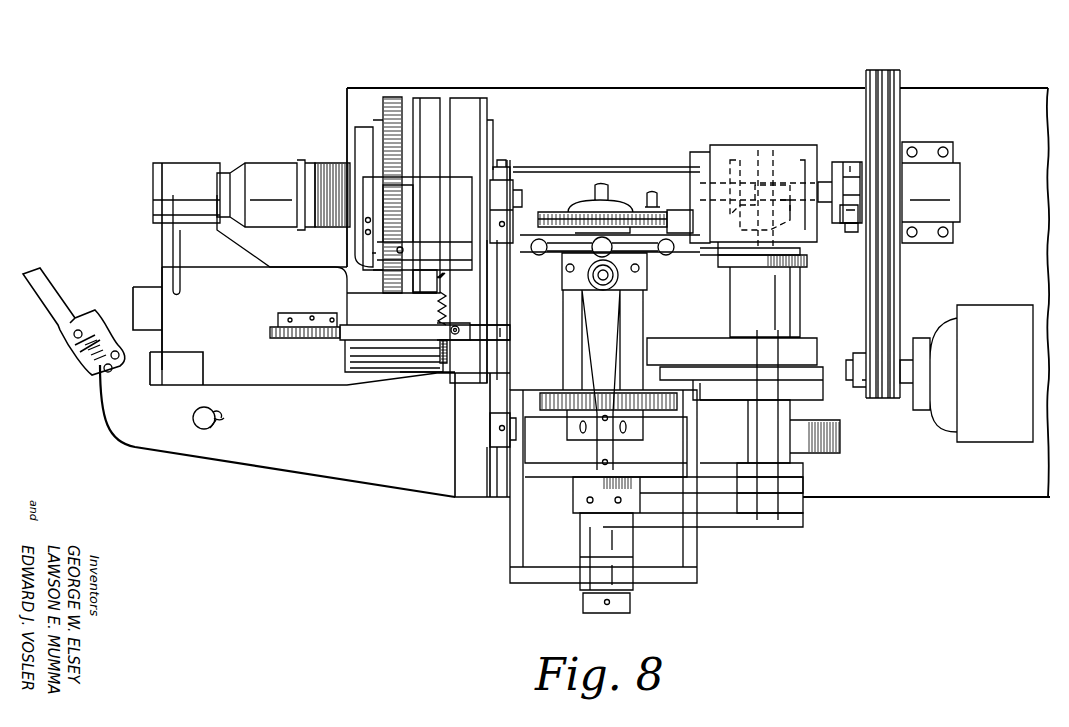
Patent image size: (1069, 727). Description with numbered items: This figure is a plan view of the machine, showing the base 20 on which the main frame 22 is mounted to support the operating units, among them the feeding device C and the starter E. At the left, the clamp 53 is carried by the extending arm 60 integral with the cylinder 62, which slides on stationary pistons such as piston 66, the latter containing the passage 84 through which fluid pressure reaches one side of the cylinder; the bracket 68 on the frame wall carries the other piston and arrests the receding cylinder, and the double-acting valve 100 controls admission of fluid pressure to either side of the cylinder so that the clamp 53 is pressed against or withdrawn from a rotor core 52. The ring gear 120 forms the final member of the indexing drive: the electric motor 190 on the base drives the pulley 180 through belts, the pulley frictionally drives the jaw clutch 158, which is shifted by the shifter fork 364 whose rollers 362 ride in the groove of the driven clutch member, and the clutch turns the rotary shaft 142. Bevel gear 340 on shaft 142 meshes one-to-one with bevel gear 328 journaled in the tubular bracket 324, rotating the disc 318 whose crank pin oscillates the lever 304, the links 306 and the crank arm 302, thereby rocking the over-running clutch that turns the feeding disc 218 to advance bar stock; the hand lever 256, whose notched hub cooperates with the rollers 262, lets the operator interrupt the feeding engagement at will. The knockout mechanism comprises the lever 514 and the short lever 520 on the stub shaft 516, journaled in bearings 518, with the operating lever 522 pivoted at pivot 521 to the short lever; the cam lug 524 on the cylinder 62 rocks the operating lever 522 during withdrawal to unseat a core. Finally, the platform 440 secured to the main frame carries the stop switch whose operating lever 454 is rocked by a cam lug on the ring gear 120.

The base 20 is at (867, 490).
The main frame 22 is at (470, 491).
The bracket 68 is at (278, 473).
The starter E is at (216, 420).
The double-acting valve 100 is at (102, 365).
The extending arm 60 is at (165, 240).
The cylinder 62 is at (288, 276).
The clamp 53 is at (287, 162).
The rotor core 52 is at (340, 160).
The ring gear 120 is at (391, 98).
The operating lever 454 is at (383, 199).
The platform 440 is at (420, 270).
The bearings 518 is at (498, 214).
The stub shaft 516 is at (504, 275).
The operating lever 522 is at (398, 308).
The cam lug 524 is at (285, 313).
The pivot 521 is at (455, 326).
The short lever 520 is at (508, 328).
The stationary piston 66 is at (445, 363).
The lever 514 is at (520, 194).
The feeding device C is at (558, 195).
The feeding disc 218 is at (641, 212).
The rollers 262 is at (618, 275).
The tubular bracket 324 is at (738, 288).
The disc 318 is at (840, 441).
The hand lever 256 is at (613, 445).
The crank arm 302 is at (635, 500).
The lever 304 is at (796, 504).
The links 306 is at (721, 499).
The bevel gear 340 is at (730, 188).
The rotary shaft 142 is at (787, 184).
The bevel gear 328 is at (780, 212).
The jaw clutch 158 is at (834, 162).
The rollers 362 is at (850, 222).
The shifter fork 364 is at (846, 230).
The passage 84 is at (890, 70).
The pulley 180 is at (901, 104).
The electric motor 190 is at (948, 306).